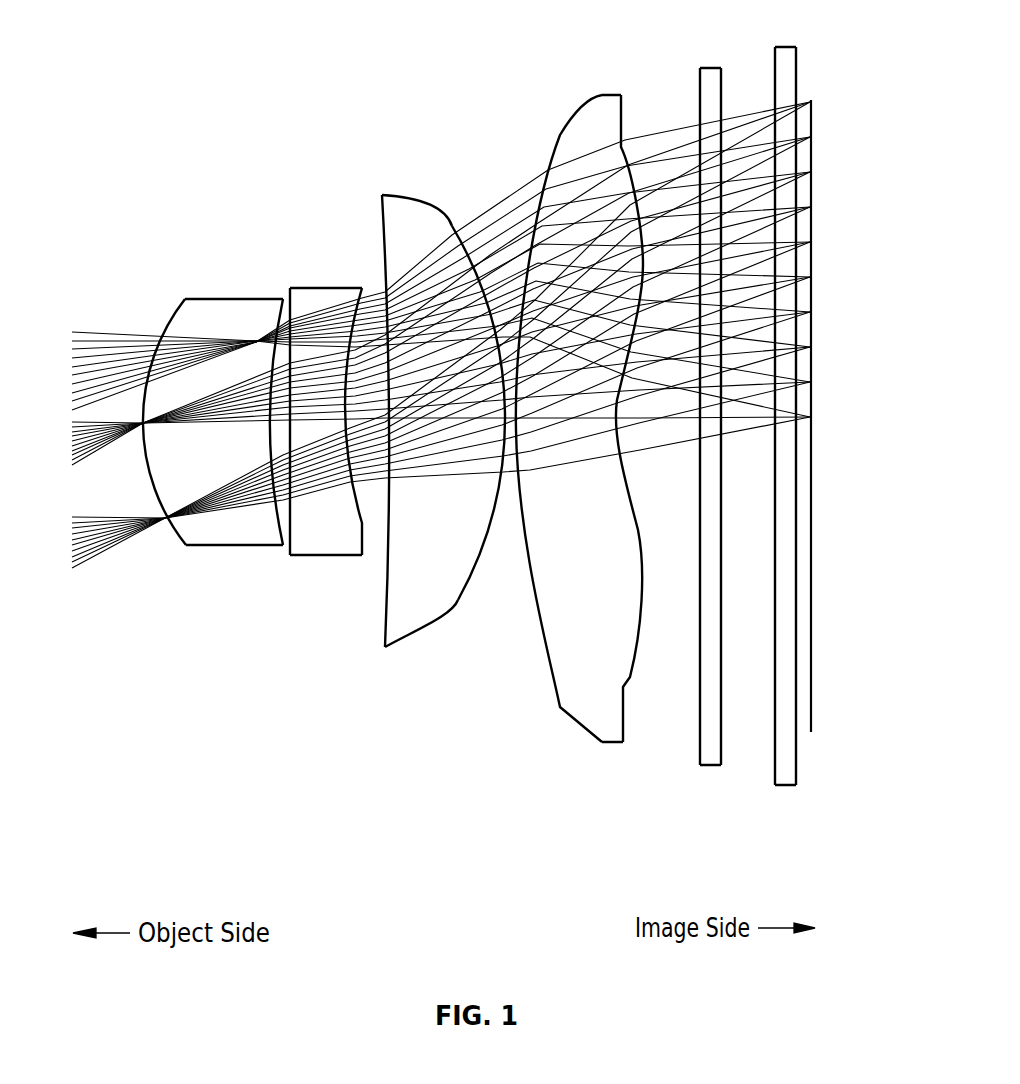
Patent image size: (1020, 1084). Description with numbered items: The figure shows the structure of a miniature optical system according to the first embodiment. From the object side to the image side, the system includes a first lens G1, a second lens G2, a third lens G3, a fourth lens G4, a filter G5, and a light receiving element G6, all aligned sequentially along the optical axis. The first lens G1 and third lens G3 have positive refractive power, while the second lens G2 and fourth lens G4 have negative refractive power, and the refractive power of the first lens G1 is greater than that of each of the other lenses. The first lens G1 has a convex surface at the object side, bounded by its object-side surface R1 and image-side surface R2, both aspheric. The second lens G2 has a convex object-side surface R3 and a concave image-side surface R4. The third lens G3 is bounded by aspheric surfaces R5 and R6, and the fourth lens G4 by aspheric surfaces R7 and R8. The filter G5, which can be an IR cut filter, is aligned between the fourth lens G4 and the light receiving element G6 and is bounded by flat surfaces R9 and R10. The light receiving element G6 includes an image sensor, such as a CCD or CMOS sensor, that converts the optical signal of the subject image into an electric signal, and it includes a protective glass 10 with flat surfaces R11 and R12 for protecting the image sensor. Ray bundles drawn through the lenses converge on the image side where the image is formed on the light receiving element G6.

The first lens G1 is at (219, 298).
The second lens G2 is at (322, 288).
The third lens G3 is at (420, 196).
The fourth lens G4 is at (608, 94).
The filter G5 is at (705, 68).
The light receiving element G6 is at (811, 43).
The object-side surface of first lens R1 is at (177, 547).
The image-side surface of first lens R2 is at (283, 531).
The object-side surface of second lens R3 is at (290, 552).
The image-side surface of second lens R4 is at (362, 524).
The object-side surface of third lens R5 is at (383, 634).
The image-side surface of third lens R6 is at (468, 598).
The object-side surface of fourth lens R7 is at (558, 708).
The image-side surface of fourth lens R8 is at (628, 680).
The object-side surface of filter R9 is at (703, 735).
The image-side surface of filter R10 is at (722, 735).
The object-side surface of protective glass R11 is at (777, 755).
The image-side surface of protective glass R12 is at (797, 755).
The protective glass 10 is at (793, 75).